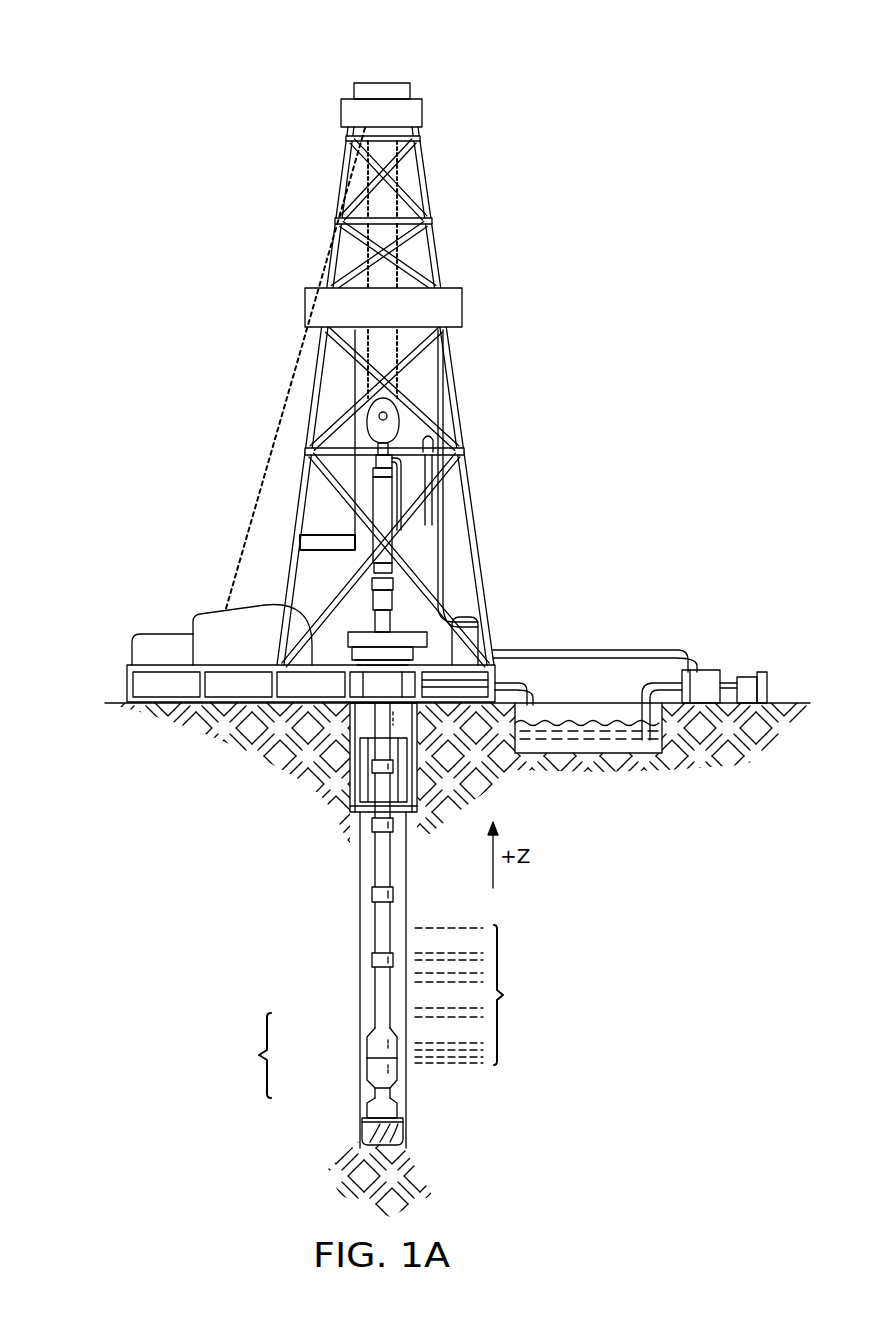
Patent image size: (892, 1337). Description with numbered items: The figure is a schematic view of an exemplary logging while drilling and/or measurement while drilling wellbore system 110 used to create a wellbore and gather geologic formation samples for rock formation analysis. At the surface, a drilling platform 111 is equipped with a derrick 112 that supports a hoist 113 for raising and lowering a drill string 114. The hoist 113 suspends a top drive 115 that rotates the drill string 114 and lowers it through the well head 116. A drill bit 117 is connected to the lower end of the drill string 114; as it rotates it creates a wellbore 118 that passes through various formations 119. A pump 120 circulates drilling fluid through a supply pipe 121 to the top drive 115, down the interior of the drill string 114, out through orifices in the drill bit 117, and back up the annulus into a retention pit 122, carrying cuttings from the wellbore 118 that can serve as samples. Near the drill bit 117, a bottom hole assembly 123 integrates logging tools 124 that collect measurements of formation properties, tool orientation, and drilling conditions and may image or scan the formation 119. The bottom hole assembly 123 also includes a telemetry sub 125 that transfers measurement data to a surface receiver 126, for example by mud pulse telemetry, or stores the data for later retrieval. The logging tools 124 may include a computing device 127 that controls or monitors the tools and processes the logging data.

The wellbore system 110 is at (272, 80).
The drilling platform 111 is at (127, 688).
The derrick 112 is at (438, 253).
The hoist 113 is at (370, 432).
The drill string 114 is at (392, 857).
The top drive 115 is at (378, 517).
The well head 116 is at (362, 630).
The drill bit 117 is at (398, 1128).
The wellbore 118 is at (407, 877).
The formations 119 is at (480, 995).
The pump 120 is at (703, 670).
The supply pipe 121 is at (597, 650).
The retention pit 122 is at (590, 730).
The bottom hole assembly 123 is at (306, 1056).
The logging tools 124 is at (377, 1067).
The telemetry sub 125 is at (377, 1048).
The surface receiver 126 is at (387, 585).
The computing device 127 is at (377, 1072).